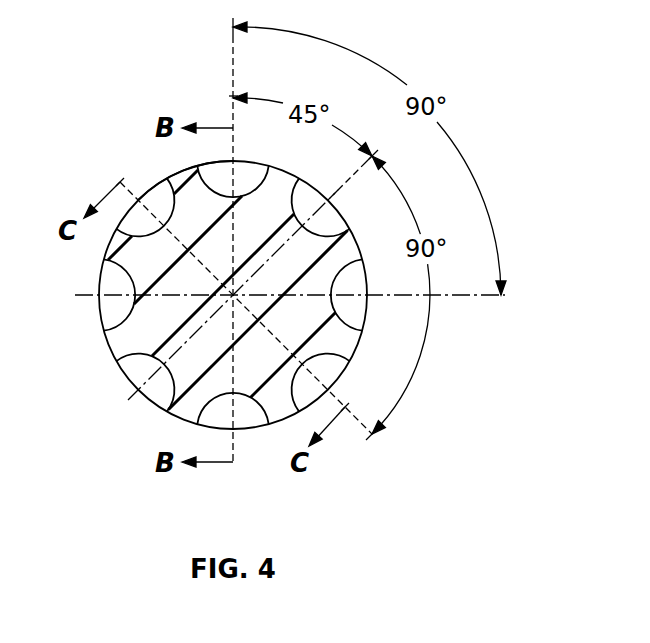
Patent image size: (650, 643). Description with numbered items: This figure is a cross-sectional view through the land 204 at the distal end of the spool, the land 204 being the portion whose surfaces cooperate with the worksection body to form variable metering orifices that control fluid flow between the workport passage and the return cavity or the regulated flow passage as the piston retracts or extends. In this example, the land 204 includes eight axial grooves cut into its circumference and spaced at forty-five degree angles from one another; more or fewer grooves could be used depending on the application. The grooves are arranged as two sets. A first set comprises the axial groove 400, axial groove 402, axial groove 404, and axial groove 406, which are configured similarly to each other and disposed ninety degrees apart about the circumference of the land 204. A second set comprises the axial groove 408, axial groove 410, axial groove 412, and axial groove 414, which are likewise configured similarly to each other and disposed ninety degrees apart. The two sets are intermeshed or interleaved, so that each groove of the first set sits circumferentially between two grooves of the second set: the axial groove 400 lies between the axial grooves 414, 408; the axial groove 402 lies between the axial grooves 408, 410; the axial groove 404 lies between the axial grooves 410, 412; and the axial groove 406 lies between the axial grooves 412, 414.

The axial groove 400 is at (222, 183).
The land 204 is at (183, 170).
The axial groove 402 is at (347, 312).
The axial groove 404 is at (241, 402).
The axial groove 406 is at (120, 303).
The axial groove 408 is at (318, 223).
The axial groove 410 is at (322, 365).
The axial groove 412 is at (148, 372).
The axial groove 414 is at (162, 208).